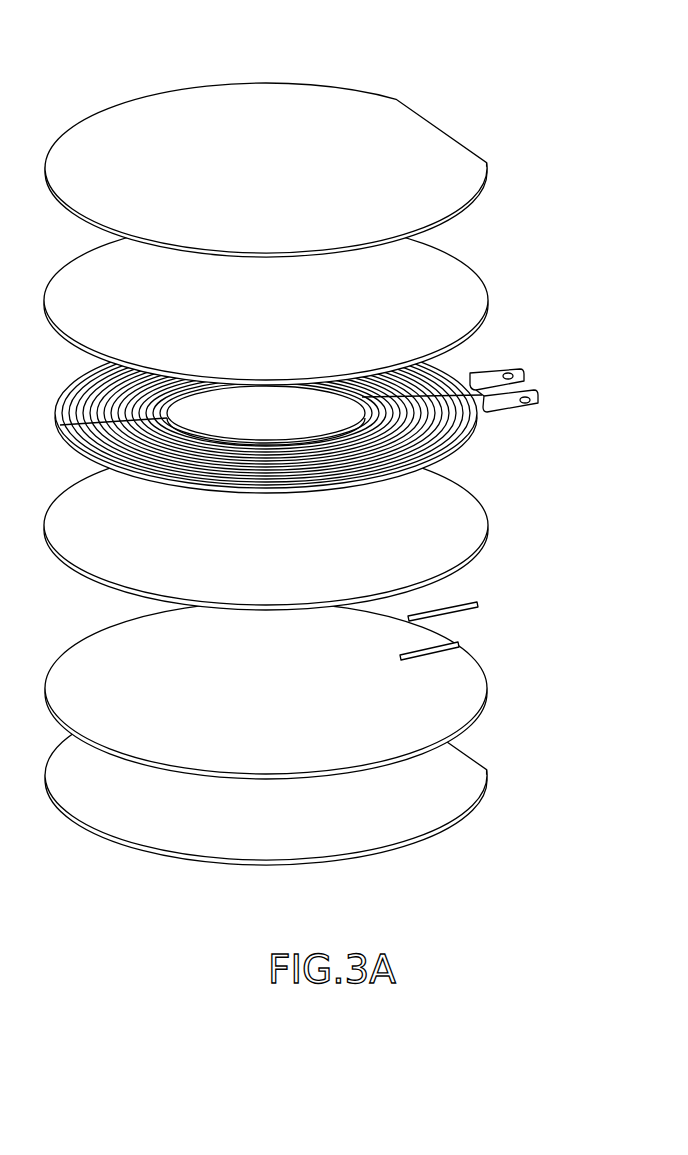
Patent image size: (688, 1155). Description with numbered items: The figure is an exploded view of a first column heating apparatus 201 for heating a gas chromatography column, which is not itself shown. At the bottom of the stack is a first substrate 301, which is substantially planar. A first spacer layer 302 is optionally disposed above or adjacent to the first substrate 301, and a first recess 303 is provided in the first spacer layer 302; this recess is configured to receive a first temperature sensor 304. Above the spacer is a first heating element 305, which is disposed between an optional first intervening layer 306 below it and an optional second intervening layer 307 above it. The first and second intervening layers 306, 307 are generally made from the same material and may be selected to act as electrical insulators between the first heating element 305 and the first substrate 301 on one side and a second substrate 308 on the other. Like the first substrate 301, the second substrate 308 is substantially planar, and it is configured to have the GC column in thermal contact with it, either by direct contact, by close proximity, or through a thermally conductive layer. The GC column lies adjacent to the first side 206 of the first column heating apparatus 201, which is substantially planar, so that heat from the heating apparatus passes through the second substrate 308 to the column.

The first column heating apparatus 201 is at (193, 32).
The first side 206 is at (312, 126).
The first substrate 301 is at (485, 792).
The first spacer layer 302 is at (487, 695).
The first recess 303 is at (458, 645).
The first temperature sensor 304 is at (477, 605).
The first heating element 305 is at (477, 423).
The first intervening layer 306 is at (490, 548).
The second intervening layer 307 is at (490, 282).
The second substrate 308 is at (488, 185).